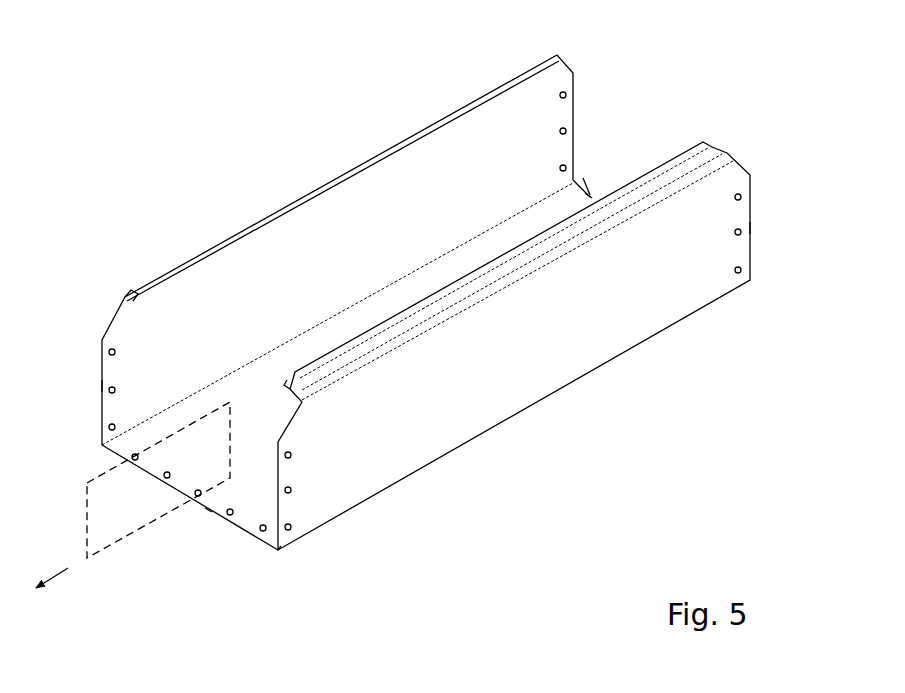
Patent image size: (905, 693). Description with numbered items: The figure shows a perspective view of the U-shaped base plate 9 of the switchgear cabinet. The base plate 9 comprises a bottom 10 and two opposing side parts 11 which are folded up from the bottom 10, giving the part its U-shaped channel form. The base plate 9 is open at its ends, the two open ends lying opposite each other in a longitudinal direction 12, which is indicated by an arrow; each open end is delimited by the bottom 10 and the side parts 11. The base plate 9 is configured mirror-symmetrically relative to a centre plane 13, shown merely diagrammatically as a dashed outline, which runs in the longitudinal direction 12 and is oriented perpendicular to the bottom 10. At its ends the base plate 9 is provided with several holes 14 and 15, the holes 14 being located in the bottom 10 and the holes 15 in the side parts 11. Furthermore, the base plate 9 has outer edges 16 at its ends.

The base plate 9 is at (423, 345).
The bottom 10 is at (270, 518).
The side parts 11 is at (547, 113).
The longitudinal direction 12 is at (60, 580).
The centre plane 13 is at (87, 505).
The holes 14 is at (257, 546).
The holes 15 is at (102, 385).
The outer edges 16 is at (588, 194).